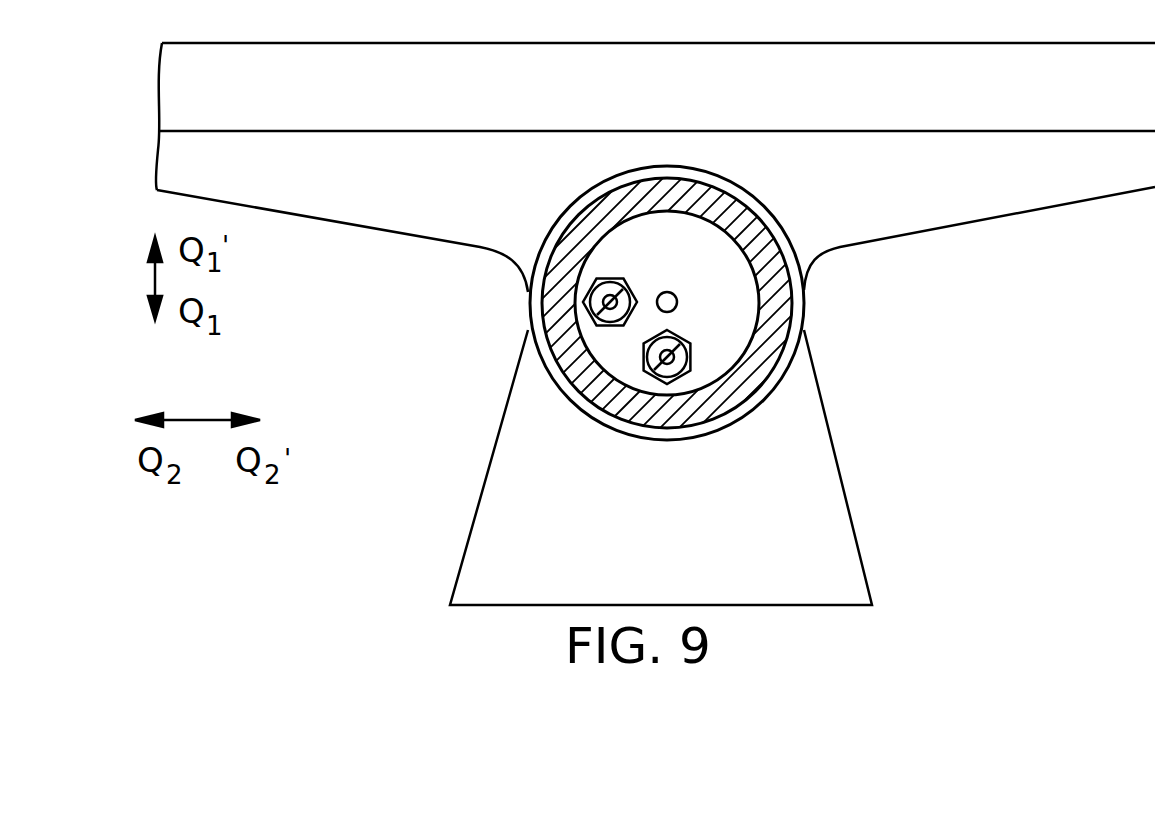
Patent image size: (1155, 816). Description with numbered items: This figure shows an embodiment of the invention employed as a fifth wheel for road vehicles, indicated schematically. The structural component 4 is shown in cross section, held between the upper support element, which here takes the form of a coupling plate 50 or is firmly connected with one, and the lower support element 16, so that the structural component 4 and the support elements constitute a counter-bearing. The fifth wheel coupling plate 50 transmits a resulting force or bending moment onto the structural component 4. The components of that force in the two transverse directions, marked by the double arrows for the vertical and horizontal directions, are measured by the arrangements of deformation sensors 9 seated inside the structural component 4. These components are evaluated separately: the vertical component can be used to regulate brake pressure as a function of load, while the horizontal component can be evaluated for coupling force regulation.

The coupling plate 50 is at (585, 87).
The structural component 4 is at (733, 298).
The deformation sensors 9 is at (588, 308).
The support element 16 is at (803, 517).